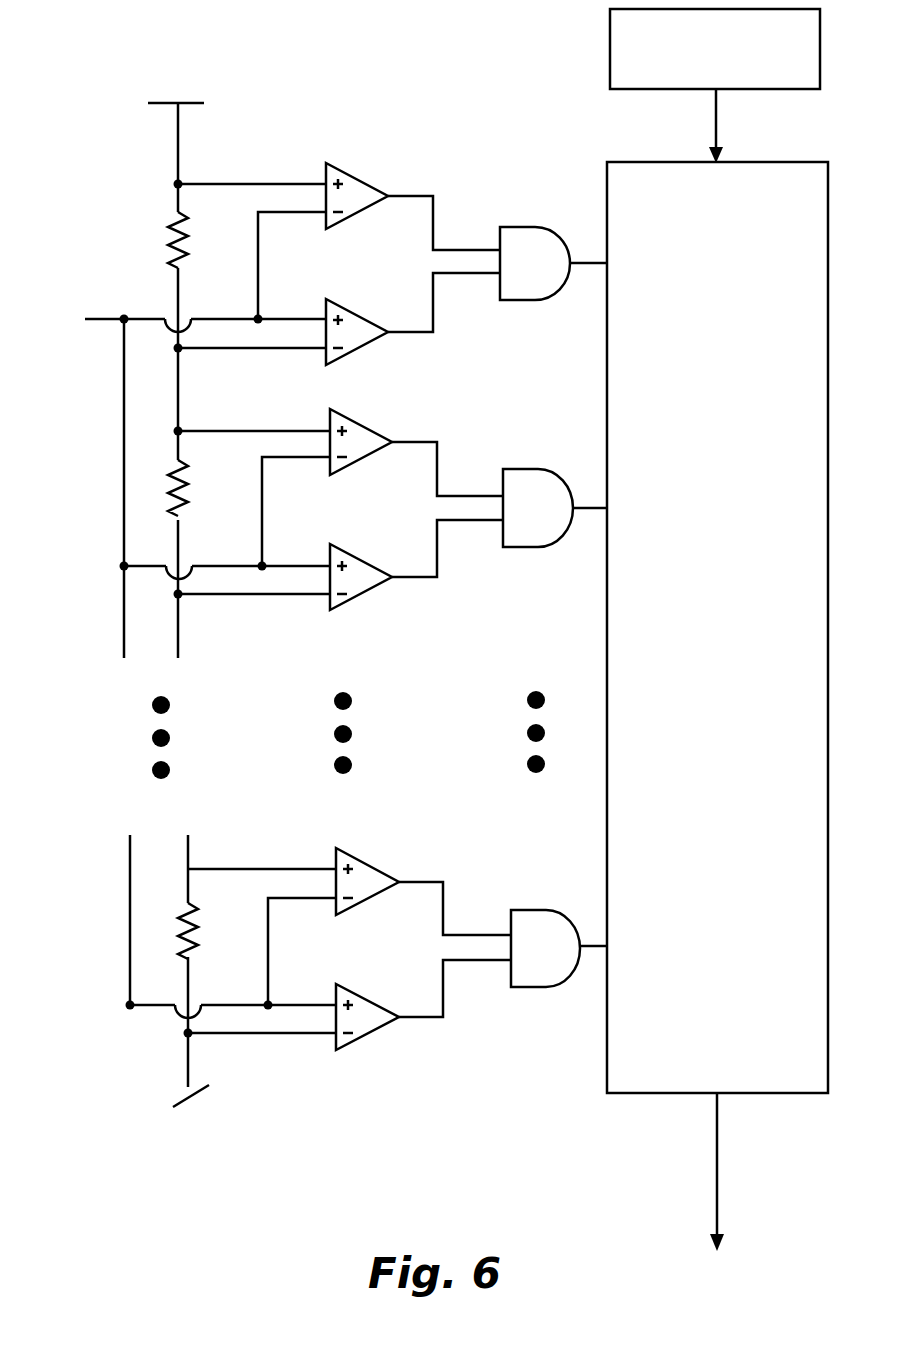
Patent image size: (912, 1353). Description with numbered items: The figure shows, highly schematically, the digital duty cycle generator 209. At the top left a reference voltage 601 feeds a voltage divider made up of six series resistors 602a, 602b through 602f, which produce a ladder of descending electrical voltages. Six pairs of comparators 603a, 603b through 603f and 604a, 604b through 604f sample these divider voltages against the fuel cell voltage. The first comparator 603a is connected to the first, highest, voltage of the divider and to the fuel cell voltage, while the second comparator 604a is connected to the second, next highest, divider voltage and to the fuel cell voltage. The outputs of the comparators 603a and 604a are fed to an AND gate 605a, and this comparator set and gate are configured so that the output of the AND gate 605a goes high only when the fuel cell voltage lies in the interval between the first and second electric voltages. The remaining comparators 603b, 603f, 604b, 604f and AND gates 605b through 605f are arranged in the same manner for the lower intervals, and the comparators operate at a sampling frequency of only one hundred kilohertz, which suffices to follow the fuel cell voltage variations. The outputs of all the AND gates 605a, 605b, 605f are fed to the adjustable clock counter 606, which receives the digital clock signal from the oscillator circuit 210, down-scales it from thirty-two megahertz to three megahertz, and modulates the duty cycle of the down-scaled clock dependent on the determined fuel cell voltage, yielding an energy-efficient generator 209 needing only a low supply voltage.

The digital duty cycle generator 209 is at (366, 92).
The oscillator circuit 210 is at (610, 25).
The reference voltage 601 is at (150, 140).
The resistor 602a is at (170, 258).
The resistor 602b is at (192, 500).
The resistor 602f is at (202, 937).
The first comparator 603a is at (360, 173).
The first comparator 603b is at (382, 436).
The first comparator 603f is at (390, 877).
The second comparator 604a is at (357, 348).
The second comparator 604b is at (365, 595).
The second comparator 604f is at (385, 1032).
The AND gate 605a is at (500, 227).
The AND gate 605b is at (510, 470).
The AND gate 605f is at (520, 910).
The adjustable clock counter 606 is at (655, 1093).